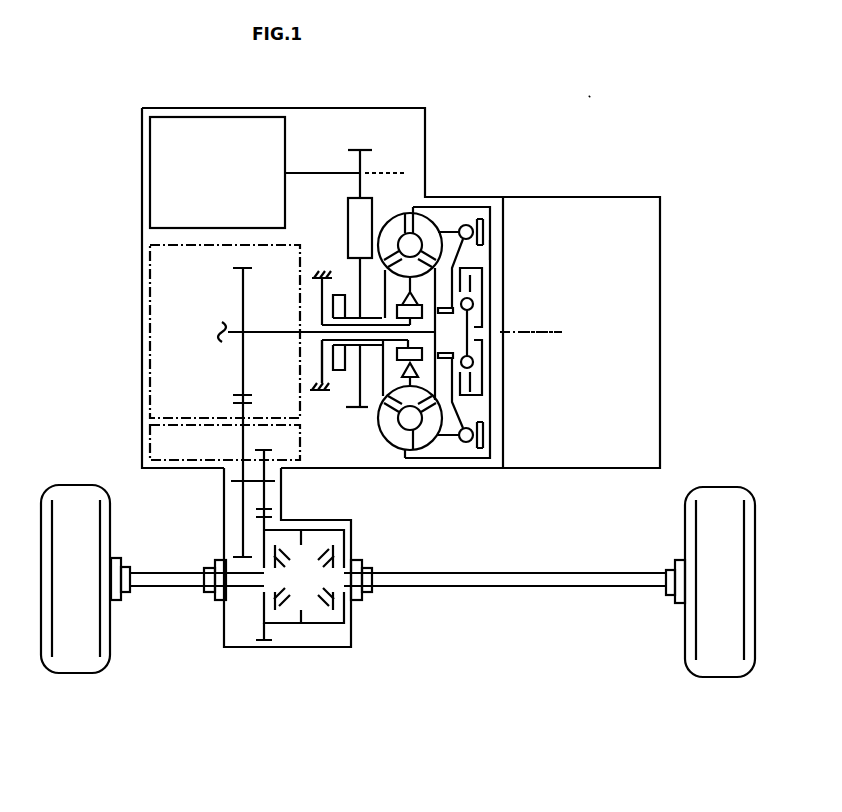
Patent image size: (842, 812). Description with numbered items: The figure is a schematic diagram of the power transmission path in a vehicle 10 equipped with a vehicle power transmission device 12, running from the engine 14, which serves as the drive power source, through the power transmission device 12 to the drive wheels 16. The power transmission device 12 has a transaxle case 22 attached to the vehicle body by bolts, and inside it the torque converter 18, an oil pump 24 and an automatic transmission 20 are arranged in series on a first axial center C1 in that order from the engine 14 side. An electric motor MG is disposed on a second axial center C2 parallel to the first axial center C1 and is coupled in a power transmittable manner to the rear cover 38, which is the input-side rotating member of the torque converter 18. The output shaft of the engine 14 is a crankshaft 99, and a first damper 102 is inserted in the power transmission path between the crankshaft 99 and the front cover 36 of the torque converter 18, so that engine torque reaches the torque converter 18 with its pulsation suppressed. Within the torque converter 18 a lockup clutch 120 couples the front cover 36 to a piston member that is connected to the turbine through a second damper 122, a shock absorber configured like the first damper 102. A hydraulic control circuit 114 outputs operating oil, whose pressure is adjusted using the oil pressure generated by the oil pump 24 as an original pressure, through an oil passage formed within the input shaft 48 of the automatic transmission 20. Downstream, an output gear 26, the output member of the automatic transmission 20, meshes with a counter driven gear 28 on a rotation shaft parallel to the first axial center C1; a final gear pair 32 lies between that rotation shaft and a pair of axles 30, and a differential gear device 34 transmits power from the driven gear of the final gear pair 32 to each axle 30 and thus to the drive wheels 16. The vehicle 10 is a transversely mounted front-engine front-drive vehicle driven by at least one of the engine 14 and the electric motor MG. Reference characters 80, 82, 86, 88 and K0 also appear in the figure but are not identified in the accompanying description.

The vehicle 10 is at (584, 92).
The vehicle power transmission device 12 is at (160, 105).
The engine 14 is at (648, 197).
The drive wheels 16 is at (77, 495).
The torque converter 18 is at (453, 205).
The automatic transmission 20 is at (150, 322).
The transaxle case 22 is at (408, 108).
The oil pump 24 is at (340, 372).
The output gear 26 is at (240, 368).
The counter driven gear 28 is at (235, 521).
The axles 30 is at (170, 588).
The final gear pair 32 is at (262, 650).
The differential gear device 34 is at (320, 635).
The front cover 36 is at (492, 250).
The rear cover 38 is at (407, 212).
The input shaft 48 is at (318, 325).
The motor input shaft 80 is at (320, 173).
The motor gear 82 is at (352, 150).
The counter gear 86 is at (357, 410).
The reduction gear 88 is at (347, 210).
The crankshaft 99 is at (512, 332).
The first damper 102 is at (472, 366).
The hydraulic control circuit 114 is at (150, 431).
The lockup clutch 120 is at (487, 236).
The second damper 122 is at (465, 445).
The engine connecting clutch K0 is at (475, 282).
The first axial center C1 is at (548, 332).
The second axial center C2 is at (385, 172).